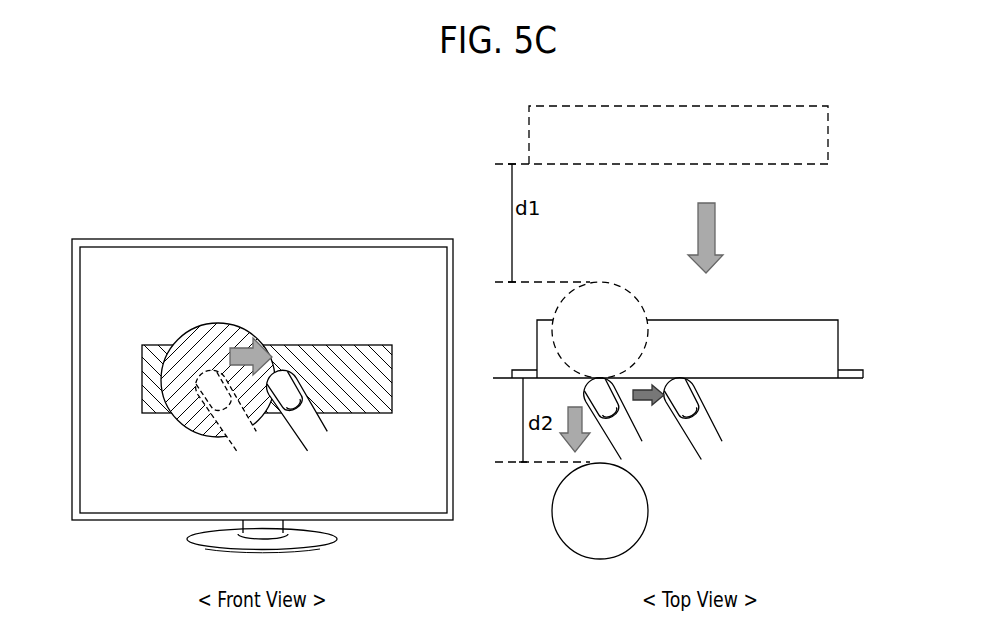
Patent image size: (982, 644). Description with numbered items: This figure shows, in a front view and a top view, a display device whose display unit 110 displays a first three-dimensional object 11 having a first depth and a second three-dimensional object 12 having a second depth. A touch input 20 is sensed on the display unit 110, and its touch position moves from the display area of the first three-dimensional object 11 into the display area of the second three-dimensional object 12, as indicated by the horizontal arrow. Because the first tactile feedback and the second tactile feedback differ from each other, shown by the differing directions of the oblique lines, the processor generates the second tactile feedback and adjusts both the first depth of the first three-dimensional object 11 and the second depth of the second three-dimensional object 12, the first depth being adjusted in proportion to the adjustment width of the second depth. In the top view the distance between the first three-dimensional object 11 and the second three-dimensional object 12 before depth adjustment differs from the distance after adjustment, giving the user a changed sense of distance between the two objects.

The display unit 110 is at (366, 260).
The second 3D object 12 is at (350, 345).
The first 3D object 11 is at (193, 335).
The touch input 20 is at (322, 432).